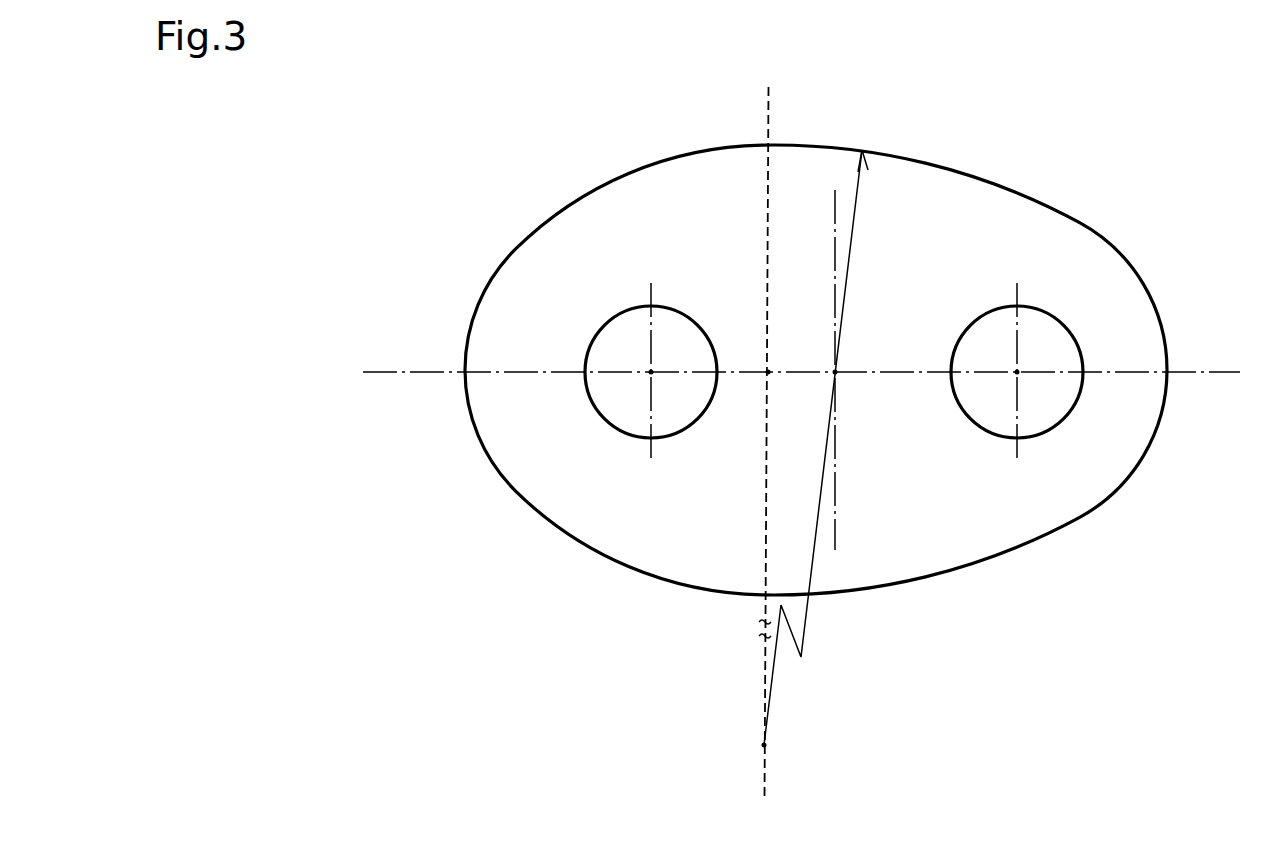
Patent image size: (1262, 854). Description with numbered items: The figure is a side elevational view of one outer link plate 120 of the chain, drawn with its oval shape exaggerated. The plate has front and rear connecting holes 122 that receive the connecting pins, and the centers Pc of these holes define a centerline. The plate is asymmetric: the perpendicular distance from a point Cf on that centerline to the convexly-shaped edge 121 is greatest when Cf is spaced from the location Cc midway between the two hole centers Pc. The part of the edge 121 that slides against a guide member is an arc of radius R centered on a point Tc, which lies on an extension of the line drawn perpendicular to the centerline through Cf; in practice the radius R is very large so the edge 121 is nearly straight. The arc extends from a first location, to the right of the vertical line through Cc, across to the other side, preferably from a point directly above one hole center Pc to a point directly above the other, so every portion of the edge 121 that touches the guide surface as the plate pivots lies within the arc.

The outer link plate 120 is at (827, 340).
The edge 121 is at (653, 165).
The connecting holes 122 is at (605, 420).
The centers of the connecting holes Pc is at (651, 372).
The point on the line connecting the hole centers Cf is at (768, 372).
The midway location between the hole centers Cc is at (835, 372).
The radius of the arc R is at (825, 447).
The center point of the arc Tc is at (766, 745).